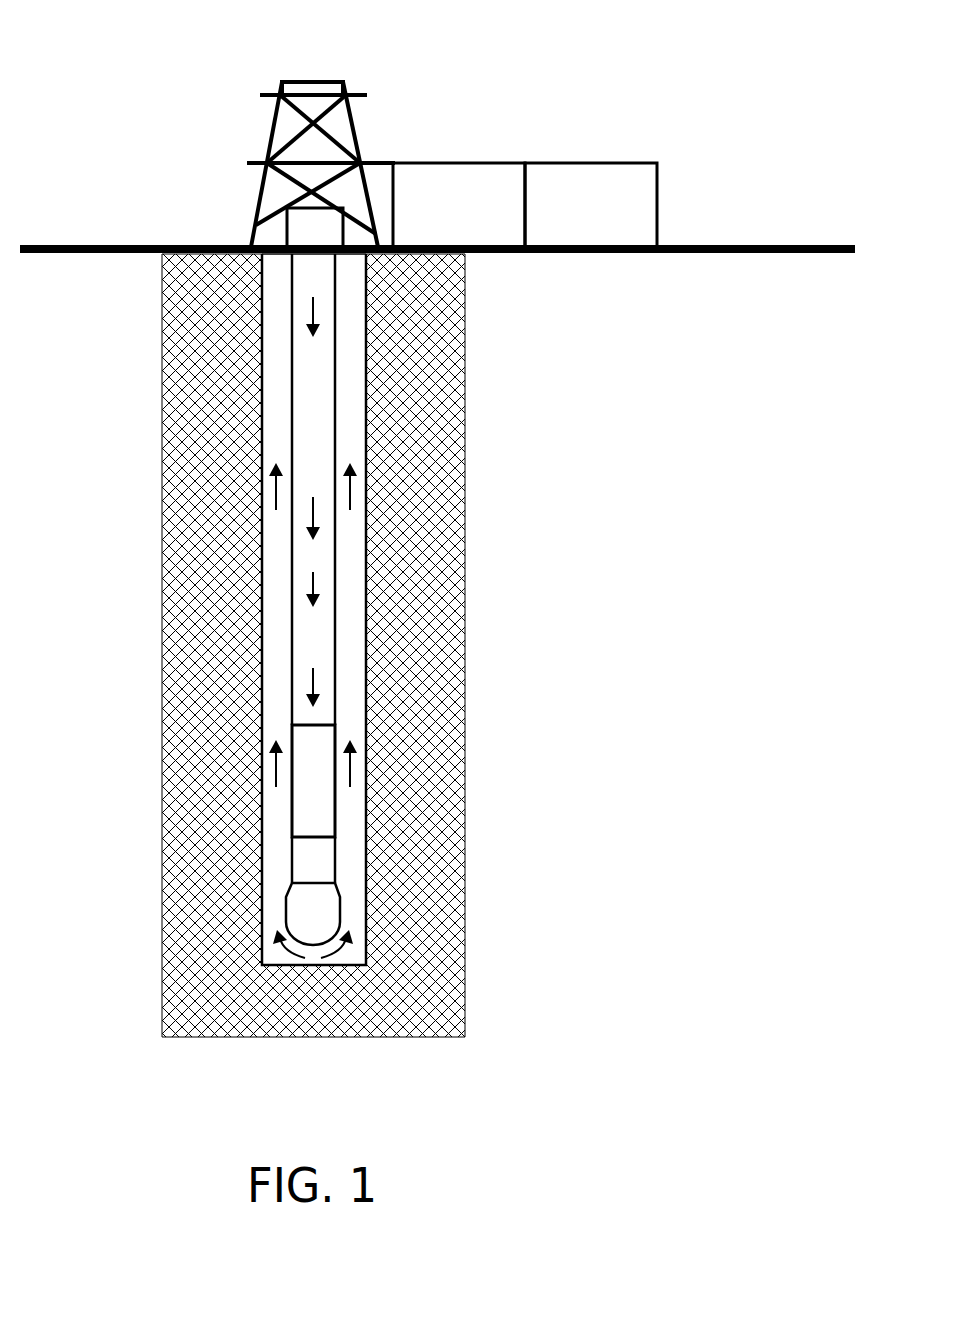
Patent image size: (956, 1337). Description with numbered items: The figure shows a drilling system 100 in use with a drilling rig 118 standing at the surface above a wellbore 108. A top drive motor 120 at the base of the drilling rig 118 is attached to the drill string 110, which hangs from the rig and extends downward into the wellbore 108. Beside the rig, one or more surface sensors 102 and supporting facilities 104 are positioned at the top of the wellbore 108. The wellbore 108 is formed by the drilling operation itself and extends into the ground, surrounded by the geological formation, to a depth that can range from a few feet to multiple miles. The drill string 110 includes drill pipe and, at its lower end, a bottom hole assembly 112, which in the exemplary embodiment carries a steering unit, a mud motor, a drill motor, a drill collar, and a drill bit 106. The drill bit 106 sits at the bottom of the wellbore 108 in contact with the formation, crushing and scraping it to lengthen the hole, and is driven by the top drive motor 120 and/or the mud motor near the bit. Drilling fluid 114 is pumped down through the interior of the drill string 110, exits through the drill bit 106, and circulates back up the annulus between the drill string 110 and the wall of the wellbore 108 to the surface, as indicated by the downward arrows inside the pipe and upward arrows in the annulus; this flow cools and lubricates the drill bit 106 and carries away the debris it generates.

The drilling system 100 is at (197, 101).
The surface sensors 102 is at (459, 205).
The supporting facilities 104 is at (591, 205).
The drill bit 106 is at (338, 916).
The wellbore 108 is at (262, 297).
The drill string 110 is at (290, 413).
The bottom hole assembly 112 is at (292, 800).
The drilling fluid 114 is at (277, 437).
The drilling rig 118 is at (283, 81).
The top drive motor 120 is at (274, 228).